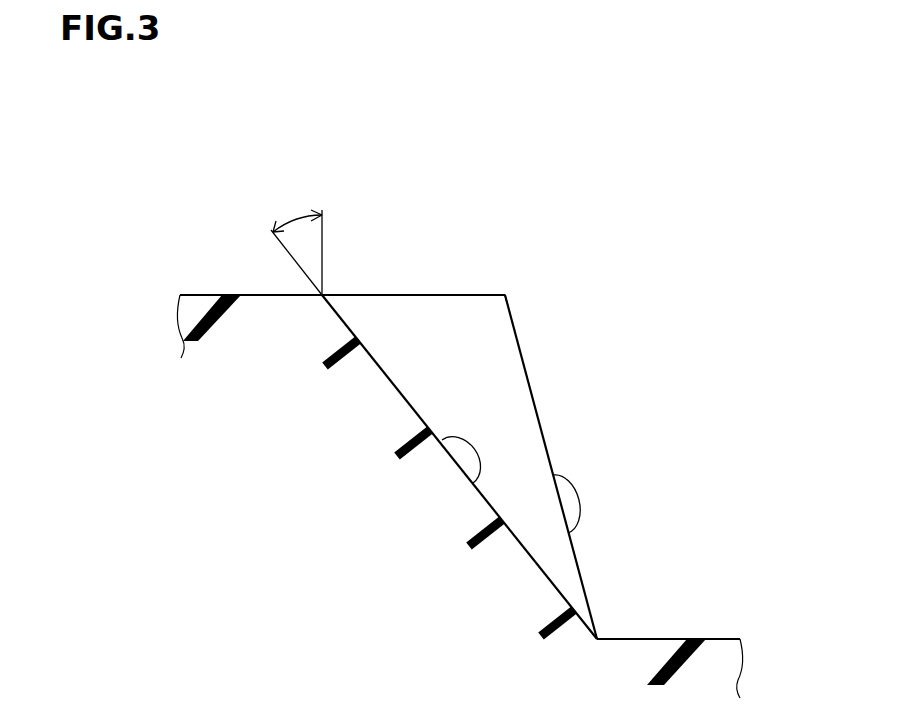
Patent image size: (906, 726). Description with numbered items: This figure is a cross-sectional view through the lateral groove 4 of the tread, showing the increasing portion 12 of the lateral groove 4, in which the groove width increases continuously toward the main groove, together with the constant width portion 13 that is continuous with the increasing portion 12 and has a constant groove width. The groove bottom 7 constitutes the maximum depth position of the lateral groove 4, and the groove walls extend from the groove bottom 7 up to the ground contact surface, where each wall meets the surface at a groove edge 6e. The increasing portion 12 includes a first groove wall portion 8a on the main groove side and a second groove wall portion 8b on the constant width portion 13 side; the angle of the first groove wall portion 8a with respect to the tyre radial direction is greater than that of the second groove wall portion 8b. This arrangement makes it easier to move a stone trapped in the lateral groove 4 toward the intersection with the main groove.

The lateral groove 4 is at (656, 450).
The groove bottom 7 is at (653, 638).
The increasing portion 12 is at (378, 355).
The constant width portion 13 is at (552, 328).
The groove edge 6e is at (505, 295).
The first groove wall portion 8a is at (477, 465).
The second groove wall portion 8b is at (580, 500).